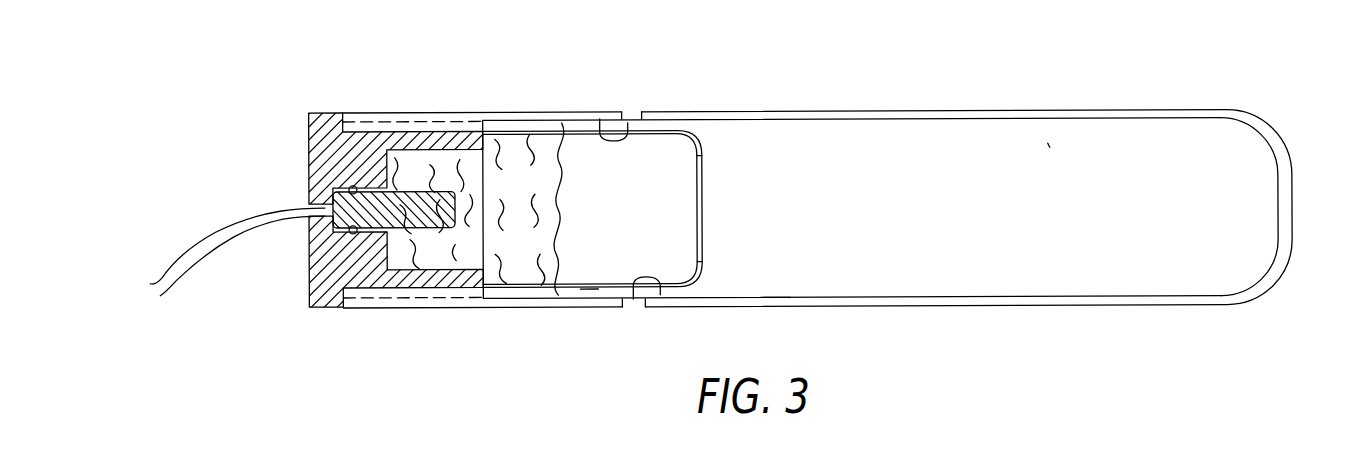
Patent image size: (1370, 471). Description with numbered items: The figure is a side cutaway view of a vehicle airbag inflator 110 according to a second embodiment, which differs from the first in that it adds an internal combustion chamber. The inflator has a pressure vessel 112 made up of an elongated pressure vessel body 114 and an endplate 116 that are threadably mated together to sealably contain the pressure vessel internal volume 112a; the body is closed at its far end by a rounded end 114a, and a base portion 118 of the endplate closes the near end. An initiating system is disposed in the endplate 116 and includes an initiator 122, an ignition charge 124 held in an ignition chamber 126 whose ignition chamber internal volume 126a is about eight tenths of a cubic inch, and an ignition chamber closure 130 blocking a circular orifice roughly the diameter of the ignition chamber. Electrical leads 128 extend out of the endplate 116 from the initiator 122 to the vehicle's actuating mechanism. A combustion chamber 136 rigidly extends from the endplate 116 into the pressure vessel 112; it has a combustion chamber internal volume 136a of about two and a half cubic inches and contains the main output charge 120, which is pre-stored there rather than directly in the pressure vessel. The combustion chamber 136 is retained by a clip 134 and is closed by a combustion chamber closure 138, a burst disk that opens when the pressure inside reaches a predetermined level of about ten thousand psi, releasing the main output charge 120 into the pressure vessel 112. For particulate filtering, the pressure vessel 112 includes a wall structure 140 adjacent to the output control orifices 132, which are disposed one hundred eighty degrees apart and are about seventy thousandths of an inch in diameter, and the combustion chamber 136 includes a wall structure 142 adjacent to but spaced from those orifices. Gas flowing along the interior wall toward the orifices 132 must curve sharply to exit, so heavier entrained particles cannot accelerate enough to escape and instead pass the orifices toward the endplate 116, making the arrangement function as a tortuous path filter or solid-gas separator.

The vehicle airbag inflator 110 is at (960, 80).
The pressure vessel 112 is at (808, 106).
The pressure vessel internal volume 112a is at (1050, 150).
The pressure vessel body 114 is at (878, 112).
The closed end of housing 114a is at (1262, 128).
The endplate 116 is at (313, 165).
The end cap base 118 is at (343, 290).
The main output charge 120 is at (553, 265).
The initiator 122 is at (408, 255).
The ignition charge 124 is at (447, 260).
The ignition chamber 126 is at (464, 250).
The ignition chamber internal volume 126a is at (417, 157).
The electrical leads 128 is at (233, 232).
The ignition chamber closure 130 is at (485, 185).
The output control orifices 132 is at (633, 110).
The retaining clip 134 is at (602, 122).
The combustion chamber 136 is at (648, 160).
The combustion chamber internal volume 136a is at (673, 229).
The combustion chamber closure 138 is at (700, 188).
The wall structure 140 is at (772, 303).
The wall structure 142 is at (588, 288).